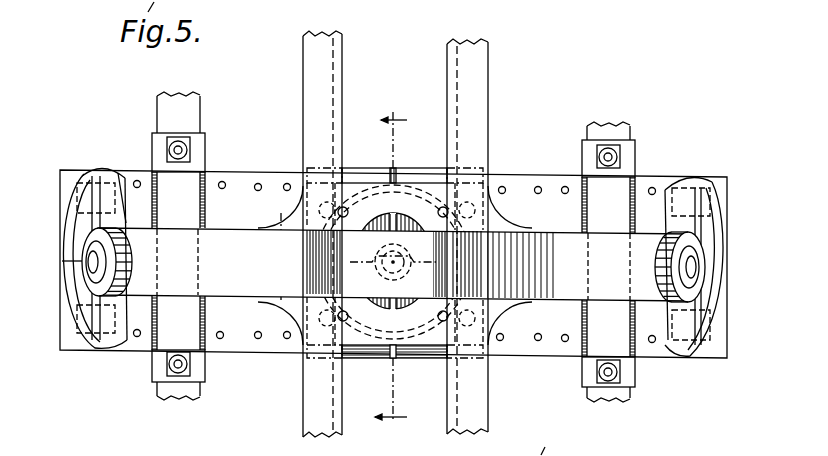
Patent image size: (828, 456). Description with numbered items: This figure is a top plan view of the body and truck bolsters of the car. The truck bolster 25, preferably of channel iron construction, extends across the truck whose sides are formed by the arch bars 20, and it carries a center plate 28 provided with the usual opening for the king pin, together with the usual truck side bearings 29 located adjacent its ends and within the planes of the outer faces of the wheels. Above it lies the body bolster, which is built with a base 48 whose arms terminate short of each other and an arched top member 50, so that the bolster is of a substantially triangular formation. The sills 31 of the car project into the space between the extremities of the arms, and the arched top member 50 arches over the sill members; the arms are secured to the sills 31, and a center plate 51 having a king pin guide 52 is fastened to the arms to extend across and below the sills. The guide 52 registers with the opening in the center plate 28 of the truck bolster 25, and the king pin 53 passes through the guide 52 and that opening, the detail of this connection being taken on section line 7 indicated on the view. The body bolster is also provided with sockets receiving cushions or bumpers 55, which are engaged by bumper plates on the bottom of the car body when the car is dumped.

The section line 7— 7 is at (391, 267).
The arch bars 20 is at (192, 119).
The truck bolster 25 is at (246, 190).
The center plate 28 is at (433, 357).
The truck side bearings 29 is at (99, 176).
The sills 31 is at (462, 72).
The base 48 is at (68, 297).
The top member 50 is at (522, 255).
The center plate 51 is at (378, 322).
The king pin guide 52 is at (400, 212).
The king pin 53 is at (386, 236).
The bumpers 55 is at (90, 254).